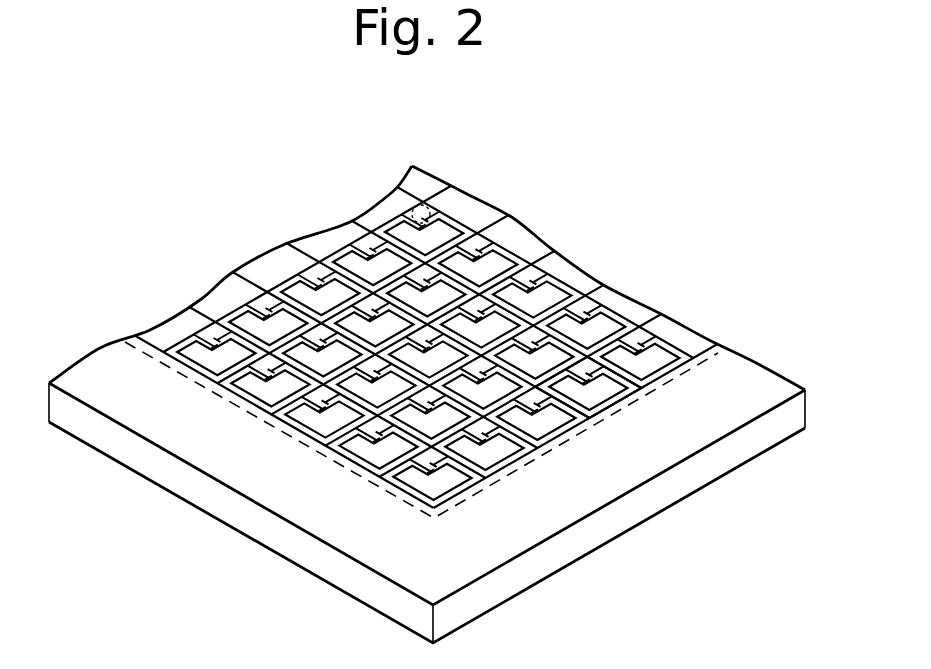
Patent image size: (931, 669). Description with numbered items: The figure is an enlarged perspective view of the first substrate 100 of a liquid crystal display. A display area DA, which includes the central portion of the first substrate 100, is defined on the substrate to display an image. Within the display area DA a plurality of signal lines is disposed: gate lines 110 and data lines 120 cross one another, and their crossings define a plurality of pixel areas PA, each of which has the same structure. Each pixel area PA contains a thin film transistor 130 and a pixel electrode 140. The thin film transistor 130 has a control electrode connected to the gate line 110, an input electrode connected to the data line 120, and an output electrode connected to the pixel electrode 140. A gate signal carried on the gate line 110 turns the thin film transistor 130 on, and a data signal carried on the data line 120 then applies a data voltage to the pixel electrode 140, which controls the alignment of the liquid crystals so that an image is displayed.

The first substrate 100 is at (245, 520).
The gate line 110 is at (248, 282).
The data line 120 is at (228, 307).
The thin film transistor 130 is at (422, 208).
The pixel electrode 140 is at (190, 350).
The pixel area PA is at (540, 282).
The display area DA is at (703, 350).